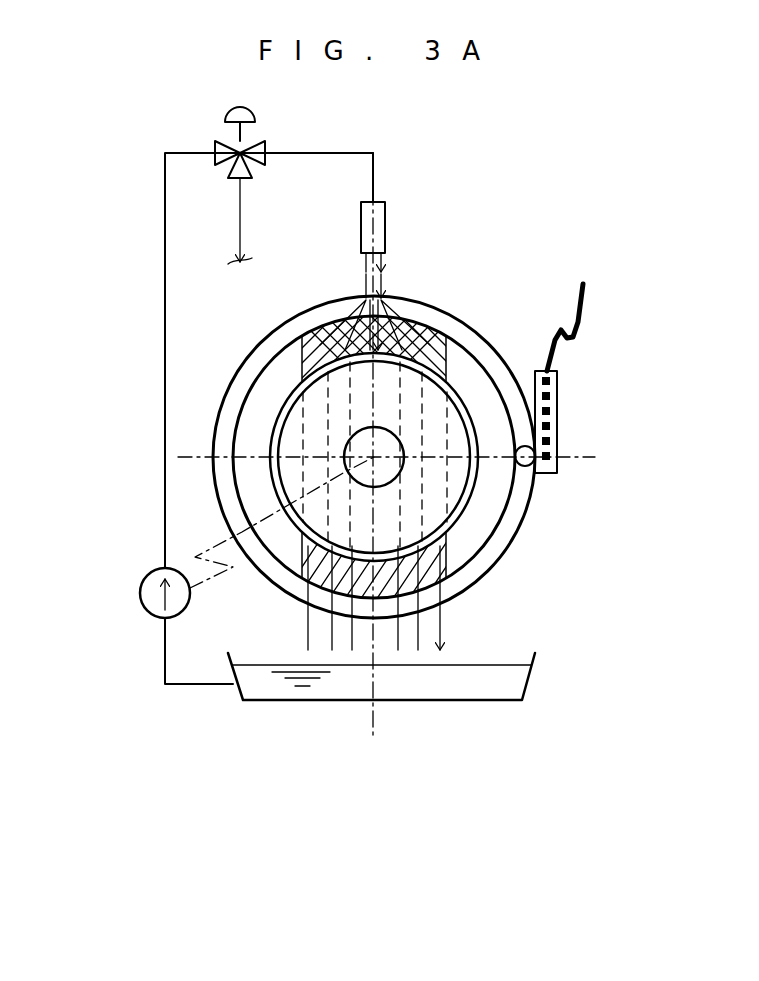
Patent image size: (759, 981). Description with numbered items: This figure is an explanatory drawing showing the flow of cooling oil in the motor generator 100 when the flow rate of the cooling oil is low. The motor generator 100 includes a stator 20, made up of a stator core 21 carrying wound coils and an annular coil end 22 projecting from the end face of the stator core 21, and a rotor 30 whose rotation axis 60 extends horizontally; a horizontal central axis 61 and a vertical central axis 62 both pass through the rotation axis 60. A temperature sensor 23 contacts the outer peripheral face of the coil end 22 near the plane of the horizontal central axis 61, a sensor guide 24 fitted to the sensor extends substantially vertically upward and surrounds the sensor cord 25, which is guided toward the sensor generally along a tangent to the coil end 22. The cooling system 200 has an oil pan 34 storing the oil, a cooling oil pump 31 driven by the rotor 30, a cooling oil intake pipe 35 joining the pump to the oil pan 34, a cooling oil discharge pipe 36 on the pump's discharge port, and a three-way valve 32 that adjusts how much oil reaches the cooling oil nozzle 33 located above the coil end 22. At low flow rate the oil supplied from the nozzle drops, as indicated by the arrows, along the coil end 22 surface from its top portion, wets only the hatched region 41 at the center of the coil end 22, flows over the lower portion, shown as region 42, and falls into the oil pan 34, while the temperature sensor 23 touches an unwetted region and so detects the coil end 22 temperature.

The motor generator 100 is at (572, 160).
The cooling system 200 is at (233, 744).
The stator 20 is at (402, 384).
The stator core 21 is at (458, 328).
The coil end 22 is at (486, 365).
The temperature sensor 23 is at (529, 466).
The sensor guide 24 is at (553, 405).
The sensor cord 25 is at (584, 318).
The rotor 30 is at (452, 485).
The cooling oil pump 31 is at (141, 605).
The three-way valve 32 is at (263, 150).
The cooling oil nozzle 33 is at (387, 213).
The oil pan 34 is at (482, 701).
The cooling oil intake pipe 35 is at (183, 690).
The cooling oil discharge pipe 36 is at (164, 300).
The hatched region 41 is at (314, 330).
The lower spray region 42 is at (455, 582).
The rotation axis 60 is at (374, 457).
The central axis 61 is at (191, 456).
The central axis 62 is at (372, 716).